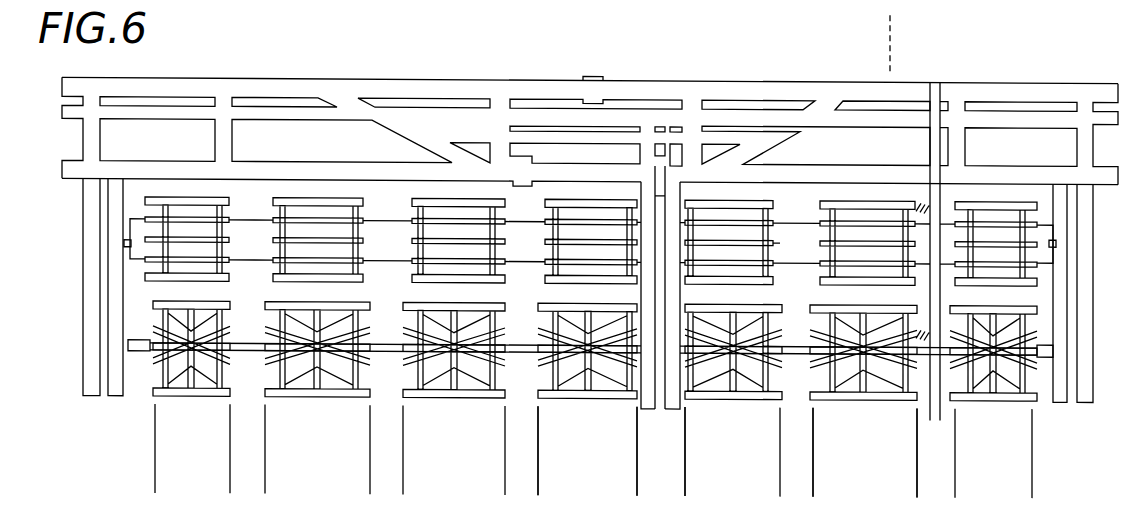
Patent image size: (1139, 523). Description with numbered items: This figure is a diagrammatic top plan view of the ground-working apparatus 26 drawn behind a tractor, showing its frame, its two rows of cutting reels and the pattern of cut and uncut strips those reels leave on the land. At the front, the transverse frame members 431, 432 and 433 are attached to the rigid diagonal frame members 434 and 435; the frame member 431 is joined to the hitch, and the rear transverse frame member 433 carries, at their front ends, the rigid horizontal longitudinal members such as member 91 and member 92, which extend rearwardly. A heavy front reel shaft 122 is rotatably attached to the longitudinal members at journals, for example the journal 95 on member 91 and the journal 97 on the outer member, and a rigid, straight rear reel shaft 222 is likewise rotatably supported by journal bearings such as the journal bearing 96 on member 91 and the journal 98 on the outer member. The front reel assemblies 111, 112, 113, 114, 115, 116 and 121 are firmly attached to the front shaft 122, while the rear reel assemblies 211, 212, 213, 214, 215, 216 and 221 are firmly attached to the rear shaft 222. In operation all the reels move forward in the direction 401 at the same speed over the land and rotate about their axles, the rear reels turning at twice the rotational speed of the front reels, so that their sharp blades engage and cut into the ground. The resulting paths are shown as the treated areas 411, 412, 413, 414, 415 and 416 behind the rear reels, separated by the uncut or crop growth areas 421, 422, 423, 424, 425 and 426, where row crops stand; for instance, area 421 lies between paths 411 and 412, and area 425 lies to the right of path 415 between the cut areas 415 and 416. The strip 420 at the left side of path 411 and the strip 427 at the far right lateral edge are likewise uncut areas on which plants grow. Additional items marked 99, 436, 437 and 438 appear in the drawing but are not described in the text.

The apparatus 26 is at (391, 69).
The longitudinal member 91 is at (95, 266).
The longitudinal member 92 is at (659, 405).
The journal 95 is at (125, 241).
The journal bearing 96 is at (128, 344).
The journal 97 is at (1053, 238).
The journal 98 is at (1053, 343).
The section line 99 is at (889, 40).
The front reel assembly 111 is at (228, 200).
The front reel assembly 112 is at (340, 197).
The front reel assembly 113 is at (478, 197).
The front reel assembly 114 is at (572, 198).
The front reel assembly 115 is at (751, 190).
The front reel assembly 116 is at (843, 197).
The front reel assembly 121 is at (983, 197).
The front reel shaft 122 is at (128, 227).
The rear reel assembly 211 is at (205, 392).
The rear reel assembly 212 is at (335, 392).
The rear reel assembly 213 is at (470, 391).
The rear reel assembly 214 is at (608, 391).
The rear reel assembly 215 is at (745, 390).
The rear reel assembly 216 is at (880, 390).
The rear reel assembly 221 is at (993, 398).
The rear reel shaft 222 is at (127, 338).
The direction of forward movement 401 is at (628, 31).
The treated area 411 is at (213, 485).
The treated area 412 is at (338, 485).
The treated area 413 is at (473, 484).
The treated area 414 is at (613, 483).
The treated area 415 is at (746, 482).
The treated area 416 is at (886, 482).
The uncut strip 420 is at (125, 451).
The uncut or crop growth area 421 is at (266, 451).
The uncut or crop growth area 422 is at (403, 450).
The uncut or crop growth area 423 is at (541, 449).
The uncut or crop growth area 424 is at (676, 464).
The uncut or crop growth area 425 is at (818, 463).
The uncut or crop growth area 426 is at (953, 462).
The strip 427 is at (1086, 461).
The frame member 431 is at (66, 86).
The frame member 432 is at (70, 105).
The rear transverse frame member 433 is at (70, 167).
The diagonal frame member 434 is at (400, 120).
The diagonal frame member 435 is at (788, 122).
The lower conductor 436 is at (768, 266).
The coil 437 is at (738, 208).
The middle conductor 438 is at (767, 248).